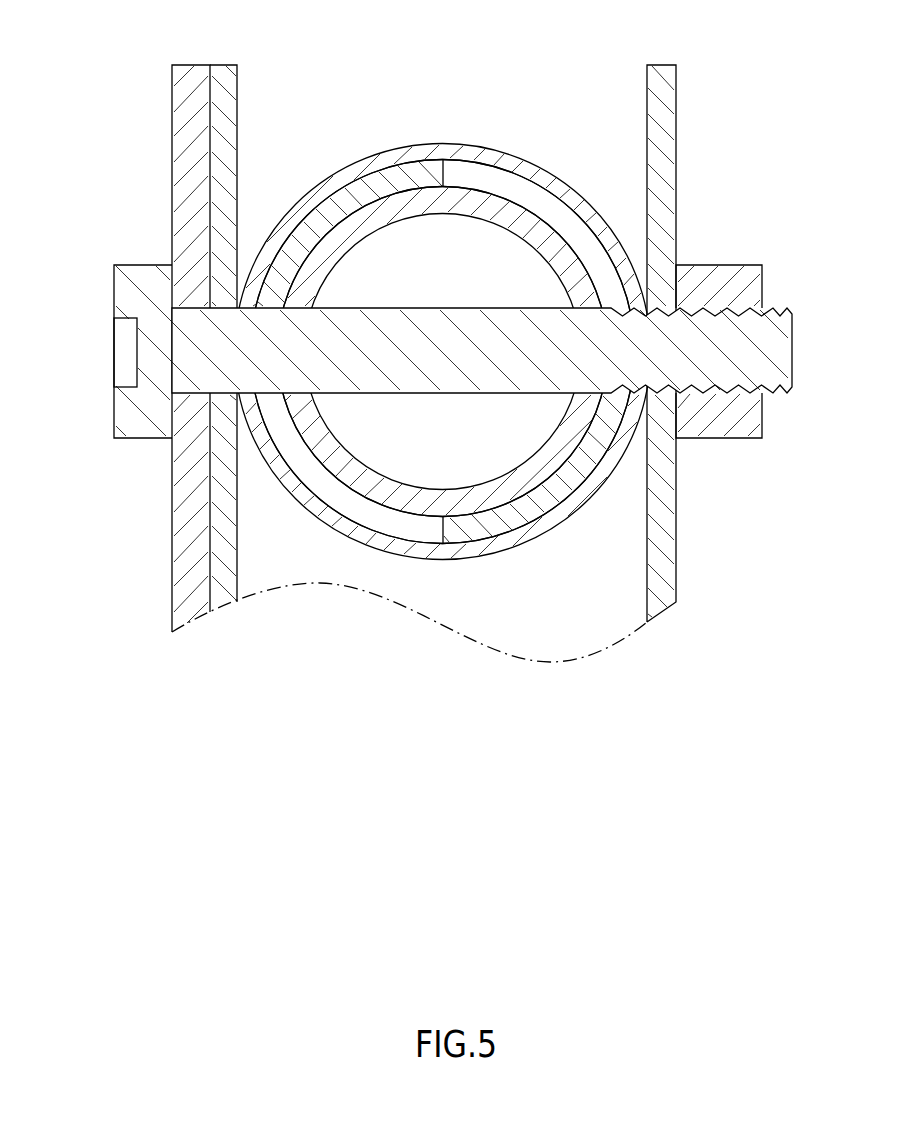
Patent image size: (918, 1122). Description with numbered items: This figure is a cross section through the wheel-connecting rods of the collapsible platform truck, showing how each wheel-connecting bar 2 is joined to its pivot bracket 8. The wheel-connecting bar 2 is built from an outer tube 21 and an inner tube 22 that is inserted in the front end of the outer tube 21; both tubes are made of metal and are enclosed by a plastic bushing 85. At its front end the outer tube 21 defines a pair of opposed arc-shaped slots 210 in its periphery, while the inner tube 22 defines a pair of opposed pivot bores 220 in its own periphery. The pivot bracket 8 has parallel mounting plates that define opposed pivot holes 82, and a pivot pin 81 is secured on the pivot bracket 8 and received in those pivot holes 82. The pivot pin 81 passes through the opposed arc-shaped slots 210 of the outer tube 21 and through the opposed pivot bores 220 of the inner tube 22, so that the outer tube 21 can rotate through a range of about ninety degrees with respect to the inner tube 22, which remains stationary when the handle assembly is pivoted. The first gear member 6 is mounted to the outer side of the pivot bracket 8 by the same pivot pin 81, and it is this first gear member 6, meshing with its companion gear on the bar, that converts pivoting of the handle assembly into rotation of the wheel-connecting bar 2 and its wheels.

The wheel-connecting bar 2 is at (508, 53).
The outer tube 21 is at (397, 184).
The arc-shaped slot 210 is at (614, 256).
The inner tube 22 is at (512, 214).
The pivot bore 220 is at (302, 317).
The plastic bushing 85 is at (336, 181).
The pivot bracket 8 is at (227, 113).
The pivot pin 81 is at (182, 339).
The pivot hole 82 is at (218, 388).
The first gear member 6 is at (178, 528).